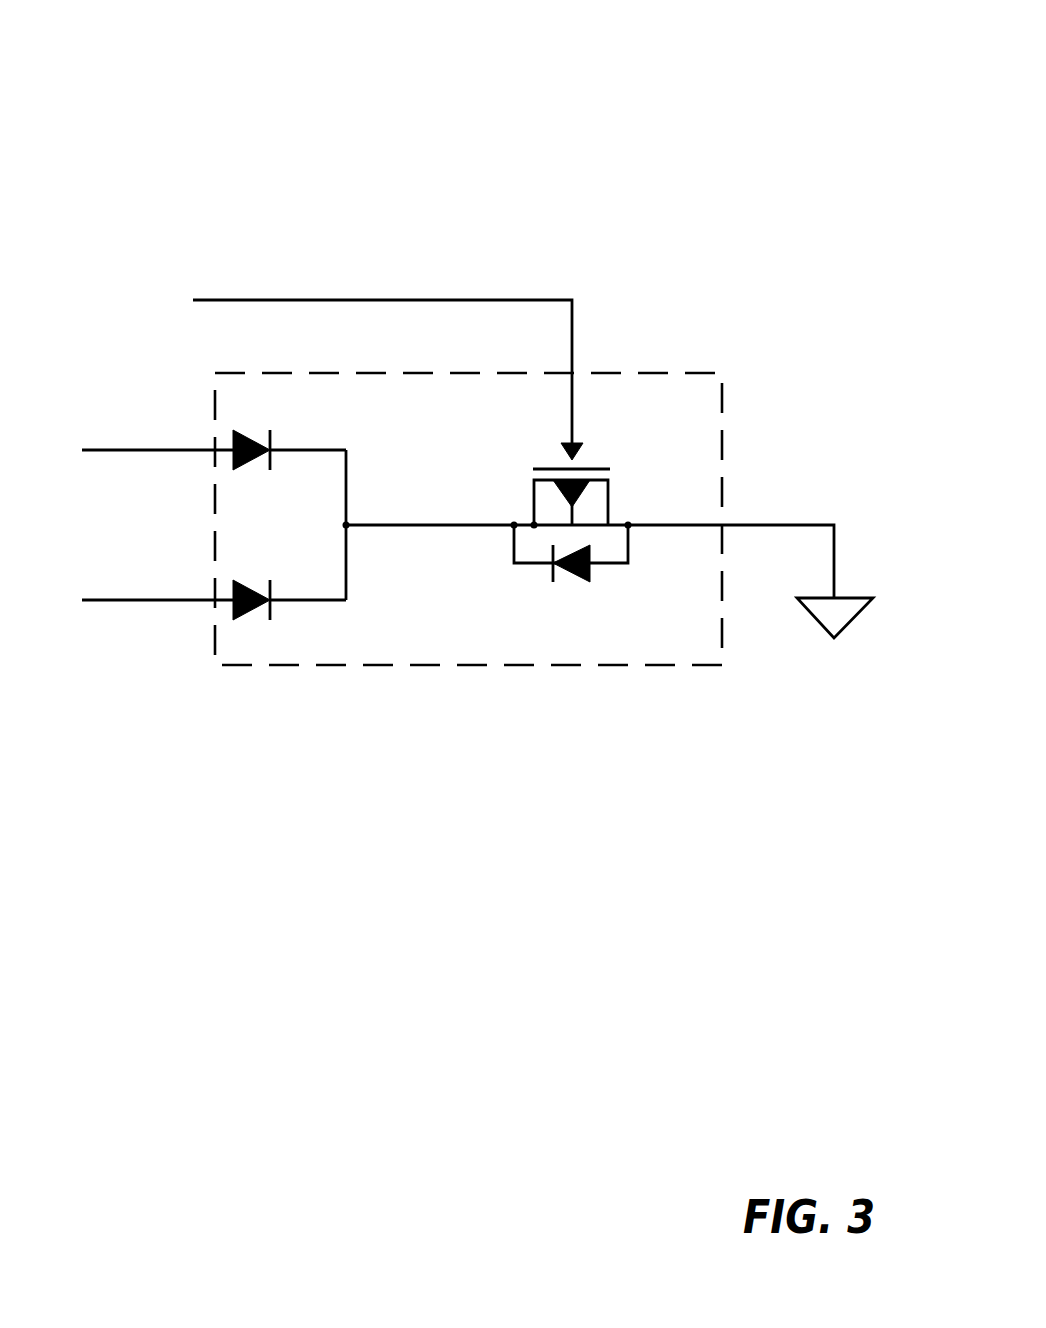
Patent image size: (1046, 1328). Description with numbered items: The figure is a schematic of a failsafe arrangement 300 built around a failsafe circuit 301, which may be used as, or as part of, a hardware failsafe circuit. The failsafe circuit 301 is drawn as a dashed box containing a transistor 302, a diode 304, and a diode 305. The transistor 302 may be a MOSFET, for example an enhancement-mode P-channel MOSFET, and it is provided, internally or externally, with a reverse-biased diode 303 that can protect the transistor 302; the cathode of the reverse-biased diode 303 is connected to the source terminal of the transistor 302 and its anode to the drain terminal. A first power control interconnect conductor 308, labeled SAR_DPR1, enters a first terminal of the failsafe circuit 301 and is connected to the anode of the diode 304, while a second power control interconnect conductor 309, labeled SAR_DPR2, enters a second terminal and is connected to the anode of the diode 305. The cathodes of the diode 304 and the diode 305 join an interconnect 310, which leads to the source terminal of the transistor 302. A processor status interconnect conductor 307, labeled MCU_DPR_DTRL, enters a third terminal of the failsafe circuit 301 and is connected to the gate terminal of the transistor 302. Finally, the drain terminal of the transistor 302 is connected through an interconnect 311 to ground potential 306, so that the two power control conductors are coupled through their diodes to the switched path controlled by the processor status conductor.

The circuit 300 is at (778, 121).
The failsafe circuit 301 is at (692, 373).
The transistor 302 is at (600, 469).
The reverse-biased diode 303 is at (573, 572).
The diode 304 is at (247, 440).
The diode 305 is at (247, 590).
The ground potential 306 is at (863, 598).
The processor status interconnect conductor 307 is at (339, 300).
The first power control interconnect conductor 308 is at (169, 450).
The second power control interconnect conductor 309 is at (169, 600).
The interconnect 310 is at (456, 525).
The interconnect 311 is at (675, 525).